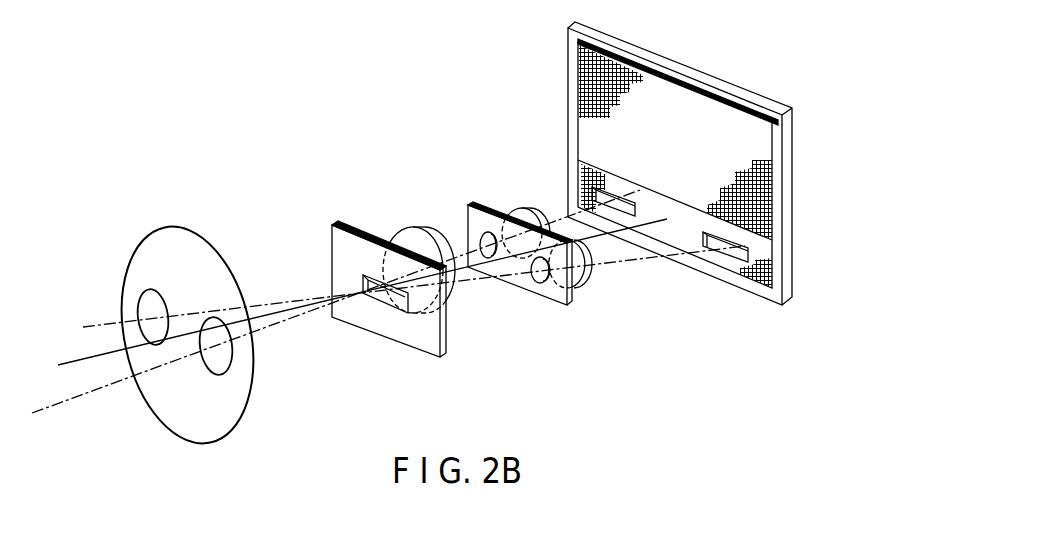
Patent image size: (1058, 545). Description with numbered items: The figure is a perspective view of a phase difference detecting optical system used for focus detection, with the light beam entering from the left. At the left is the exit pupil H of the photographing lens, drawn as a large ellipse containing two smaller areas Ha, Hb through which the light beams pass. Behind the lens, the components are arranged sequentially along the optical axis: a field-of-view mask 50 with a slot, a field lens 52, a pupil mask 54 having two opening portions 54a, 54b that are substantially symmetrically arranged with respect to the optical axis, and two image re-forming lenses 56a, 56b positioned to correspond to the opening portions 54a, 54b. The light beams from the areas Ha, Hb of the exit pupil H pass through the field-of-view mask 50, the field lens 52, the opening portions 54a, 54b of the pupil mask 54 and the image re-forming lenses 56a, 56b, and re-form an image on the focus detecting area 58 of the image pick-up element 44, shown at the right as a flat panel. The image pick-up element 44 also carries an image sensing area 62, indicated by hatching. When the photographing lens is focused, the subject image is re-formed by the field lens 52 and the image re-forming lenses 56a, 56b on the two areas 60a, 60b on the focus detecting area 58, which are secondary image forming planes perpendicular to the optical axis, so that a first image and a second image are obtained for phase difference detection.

The exit pupil H is at (200, 241).
The area of exit pupil Ha is at (228, 372).
The area of exit pupil Hb is at (140, 297).
The field-of-view mask 50 is at (338, 222).
The field lens 52 is at (423, 227).
The pupil mask 54 is at (472, 203).
The opening portion 54a is at (487, 258).
The opening portion 54b is at (538, 285).
The image re-forming lens 56a is at (516, 211).
The image re-forming lens 56b is at (584, 287).
The image pick-up element 44 is at (793, 122).
The focus detecting area 58 is at (760, 273).
The area 60a is at (632, 208).
The area 60b is at (733, 249).
The image sensing area 62 is at (768, 203).